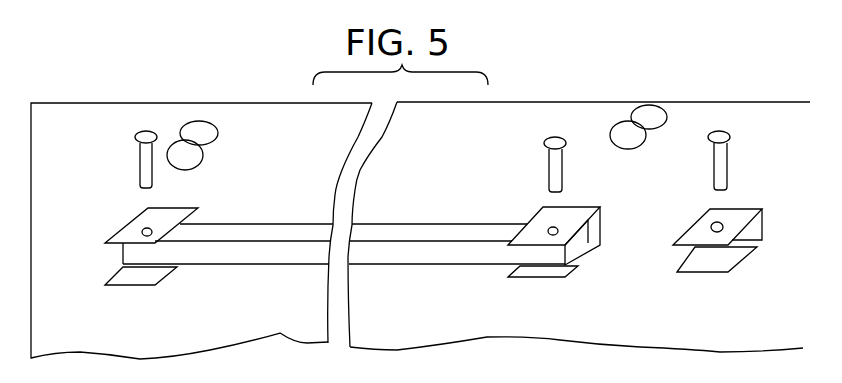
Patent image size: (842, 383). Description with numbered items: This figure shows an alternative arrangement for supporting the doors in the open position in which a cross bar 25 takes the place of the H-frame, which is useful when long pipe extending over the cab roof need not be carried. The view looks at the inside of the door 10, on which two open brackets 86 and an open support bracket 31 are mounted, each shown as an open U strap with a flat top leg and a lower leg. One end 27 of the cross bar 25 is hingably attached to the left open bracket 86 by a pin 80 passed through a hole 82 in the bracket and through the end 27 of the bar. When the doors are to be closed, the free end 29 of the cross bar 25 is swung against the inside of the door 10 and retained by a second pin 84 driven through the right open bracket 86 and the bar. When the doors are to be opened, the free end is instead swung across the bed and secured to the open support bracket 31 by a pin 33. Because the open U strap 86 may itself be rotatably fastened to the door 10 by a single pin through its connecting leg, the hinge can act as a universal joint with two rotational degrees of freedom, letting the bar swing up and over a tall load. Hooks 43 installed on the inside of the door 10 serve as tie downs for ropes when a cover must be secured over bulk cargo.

The door 10 is at (107, 123).
The hook 43 is at (198, 132).
The pin 80 is at (143, 167).
The pin 84 is at (550, 170).
The pin 33 is at (723, 162).
The cross bar 25 is at (260, 253).
The end of the cross bar 27 is at (157, 255).
The hole 82 is at (142, 234).
The open bracket 86 is at (138, 275).
The free end of the cross bar 29 is at (558, 255).
The open support bracket 31 is at (708, 262).